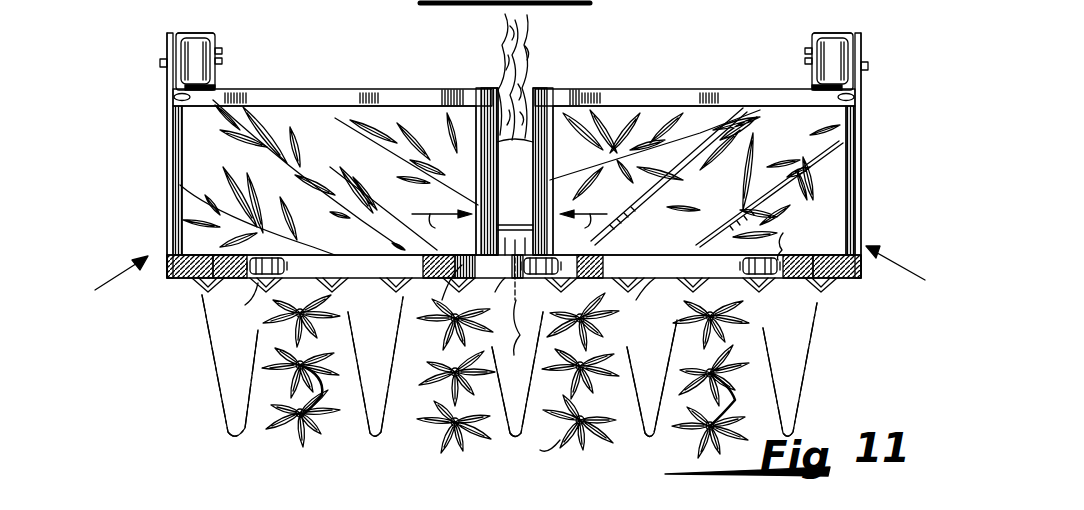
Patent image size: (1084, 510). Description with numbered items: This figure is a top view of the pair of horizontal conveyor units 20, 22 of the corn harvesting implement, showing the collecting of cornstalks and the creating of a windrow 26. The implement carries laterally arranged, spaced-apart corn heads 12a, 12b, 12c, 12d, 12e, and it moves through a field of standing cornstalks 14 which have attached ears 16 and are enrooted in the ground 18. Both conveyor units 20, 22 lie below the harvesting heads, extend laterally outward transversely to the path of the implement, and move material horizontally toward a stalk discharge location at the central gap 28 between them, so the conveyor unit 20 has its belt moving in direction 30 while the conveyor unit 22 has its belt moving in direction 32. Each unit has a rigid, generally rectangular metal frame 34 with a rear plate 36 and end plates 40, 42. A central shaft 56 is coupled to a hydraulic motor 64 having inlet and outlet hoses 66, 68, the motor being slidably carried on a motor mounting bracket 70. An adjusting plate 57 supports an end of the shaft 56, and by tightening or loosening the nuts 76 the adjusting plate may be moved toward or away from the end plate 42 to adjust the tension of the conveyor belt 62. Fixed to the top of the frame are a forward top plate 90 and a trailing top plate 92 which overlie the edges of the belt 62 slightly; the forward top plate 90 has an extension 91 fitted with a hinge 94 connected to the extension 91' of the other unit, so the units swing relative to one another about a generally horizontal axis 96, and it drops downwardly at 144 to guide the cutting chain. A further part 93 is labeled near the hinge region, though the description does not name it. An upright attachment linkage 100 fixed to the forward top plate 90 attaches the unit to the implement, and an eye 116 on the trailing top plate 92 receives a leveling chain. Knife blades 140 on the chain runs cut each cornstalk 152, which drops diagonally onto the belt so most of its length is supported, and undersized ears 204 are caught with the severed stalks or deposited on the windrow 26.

The corn head 12a is at (228, 428).
The corn head 12b is at (371, 440).
The corn head 12c is at (521, 440).
The corn head 12d is at (668, 455).
The corn head 12e is at (803, 408).
The standing cornstalks 14 is at (318, 403).
The ears 16 is at (562, 438).
The ground 18 is at (832, 374).
The horizontal conveyor unit 20 is at (925, 280).
The horizontal conveyor unit 22 is at (95, 290).
The windrow 26 is at (545, 40).
The central gap 28 is at (503, 226).
The direction of belt movement 30 is at (583, 226).
The direction of belt movement 32 is at (442, 225).
The frame 34 is at (172, 170).
The rear plate 36 is at (384, 89).
The end plate 40 is at (492, 163).
The end plate 42 is at (176, 232).
The central shaft 56 is at (218, 90).
The adjusting plate 57 is at (175, 42).
The conveyor belt 62 is at (334, 237).
The hydraulic motor 64 is at (206, 37).
The inlet and outlet hose 66 is at (222, 61).
The inlet and outlet hose 68 is at (222, 51).
The motor mounting bracket 70 is at (178, 34).
The nut 76 is at (160, 63).
The forward top plate 90 is at (372, 262).
The extension 91 is at (531, 284).
The extension 91' is at (490, 292).
The trailing top plate 92 is at (447, 90).
The guide 93 is at (655, 278).
The hinge 94 is at (462, 265).
The horizontal axis 96 is at (514, 352).
The upright attachment linkage 100 is at (262, 300).
The eye 116 is at (174, 97).
The knife blade 140 is at (202, 284).
The drop of forward top plate 144 is at (388, 280).
The cornstalk 152 is at (382, 138).
The undersized ear 204 is at (258, 186).